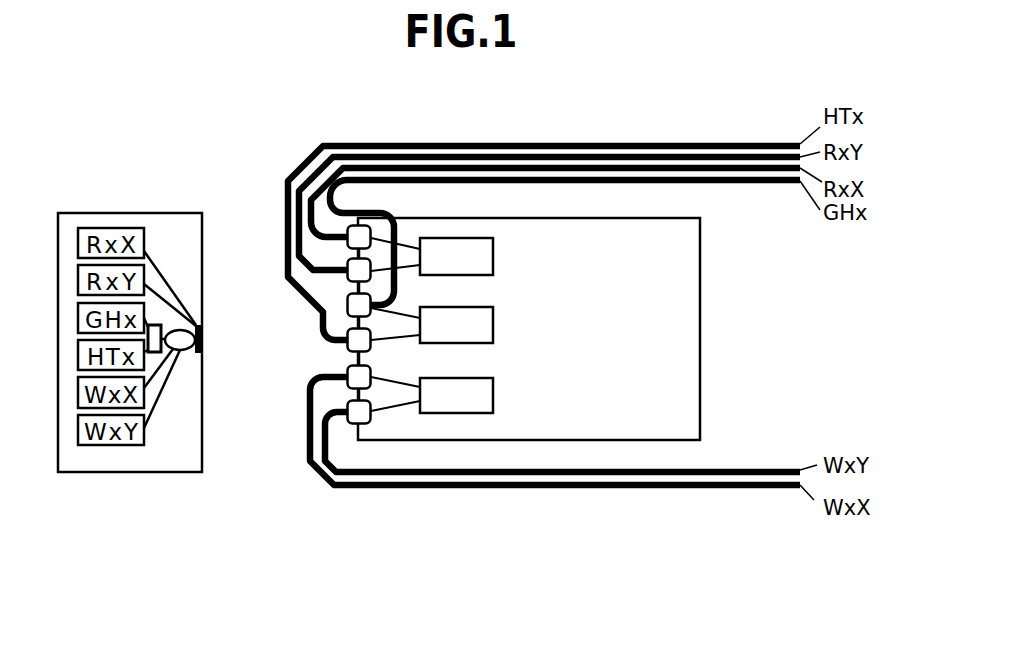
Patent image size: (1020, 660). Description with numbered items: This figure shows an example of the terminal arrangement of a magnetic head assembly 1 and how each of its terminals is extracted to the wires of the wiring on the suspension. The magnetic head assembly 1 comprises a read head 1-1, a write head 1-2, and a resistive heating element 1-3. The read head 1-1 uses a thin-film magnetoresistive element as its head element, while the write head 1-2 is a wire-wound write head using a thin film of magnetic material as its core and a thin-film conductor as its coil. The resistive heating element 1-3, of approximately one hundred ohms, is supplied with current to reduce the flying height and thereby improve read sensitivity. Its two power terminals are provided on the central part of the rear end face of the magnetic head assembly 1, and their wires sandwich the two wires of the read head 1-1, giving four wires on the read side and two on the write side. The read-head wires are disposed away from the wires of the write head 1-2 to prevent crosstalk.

The magnetic head assembly 1 is at (673, 318).
The read head 1-1 is at (482, 261).
The write head 1-2 is at (482, 405).
The resistive heating element 1-3 is at (482, 336).